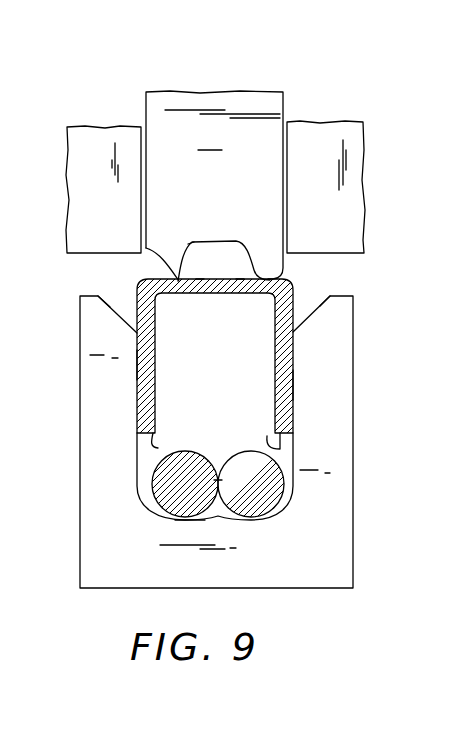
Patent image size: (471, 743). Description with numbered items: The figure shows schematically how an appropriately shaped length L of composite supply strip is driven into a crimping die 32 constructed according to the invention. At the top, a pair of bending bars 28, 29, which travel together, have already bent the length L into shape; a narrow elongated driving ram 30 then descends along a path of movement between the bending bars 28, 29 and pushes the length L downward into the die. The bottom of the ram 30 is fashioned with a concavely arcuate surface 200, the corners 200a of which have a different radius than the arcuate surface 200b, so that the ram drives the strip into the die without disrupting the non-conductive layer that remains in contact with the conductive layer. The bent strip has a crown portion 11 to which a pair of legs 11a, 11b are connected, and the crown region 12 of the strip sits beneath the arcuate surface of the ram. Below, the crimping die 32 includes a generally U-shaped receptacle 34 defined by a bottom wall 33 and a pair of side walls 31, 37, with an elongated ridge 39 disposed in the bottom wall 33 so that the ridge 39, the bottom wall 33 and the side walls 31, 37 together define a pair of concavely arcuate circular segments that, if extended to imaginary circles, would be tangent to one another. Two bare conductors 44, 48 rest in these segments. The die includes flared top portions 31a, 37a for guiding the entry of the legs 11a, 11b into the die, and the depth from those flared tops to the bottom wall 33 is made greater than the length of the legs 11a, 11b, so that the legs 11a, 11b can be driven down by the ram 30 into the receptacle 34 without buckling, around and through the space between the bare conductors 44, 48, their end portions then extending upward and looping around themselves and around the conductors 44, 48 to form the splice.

The bending bar 28 is at (98, 133).
The bending bar 29 is at (326, 128).
The driving ram 30 is at (214, 185).
The concavely arcuate surface 200 is at (217, 239).
The corners of the arcuate surface 200a is at (146, 247).
The arcuate surface 200b is at (188, 243).
The crown portion 11 is at (200, 278).
The second lip 12 is at (240, 278).
The length of composite supply strip L is at (215, 357).
The leg 11a is at (148, 367).
The leg 11b is at (281, 387).
The flared top portion 31a is at (98, 293).
The flared top portion 37a is at (338, 296).
The crimping die 32 is at (353, 410).
The U-shaped receptacle 34 is at (170, 445).
The side wall 31 is at (158, 433).
The side wall 37 is at (267, 436).
The elongated ridge 39 is at (228, 438).
The bare conductor 44 is at (160, 512).
The bare conductor 48 is at (253, 518).
The bottom wall 33 is at (191, 521).